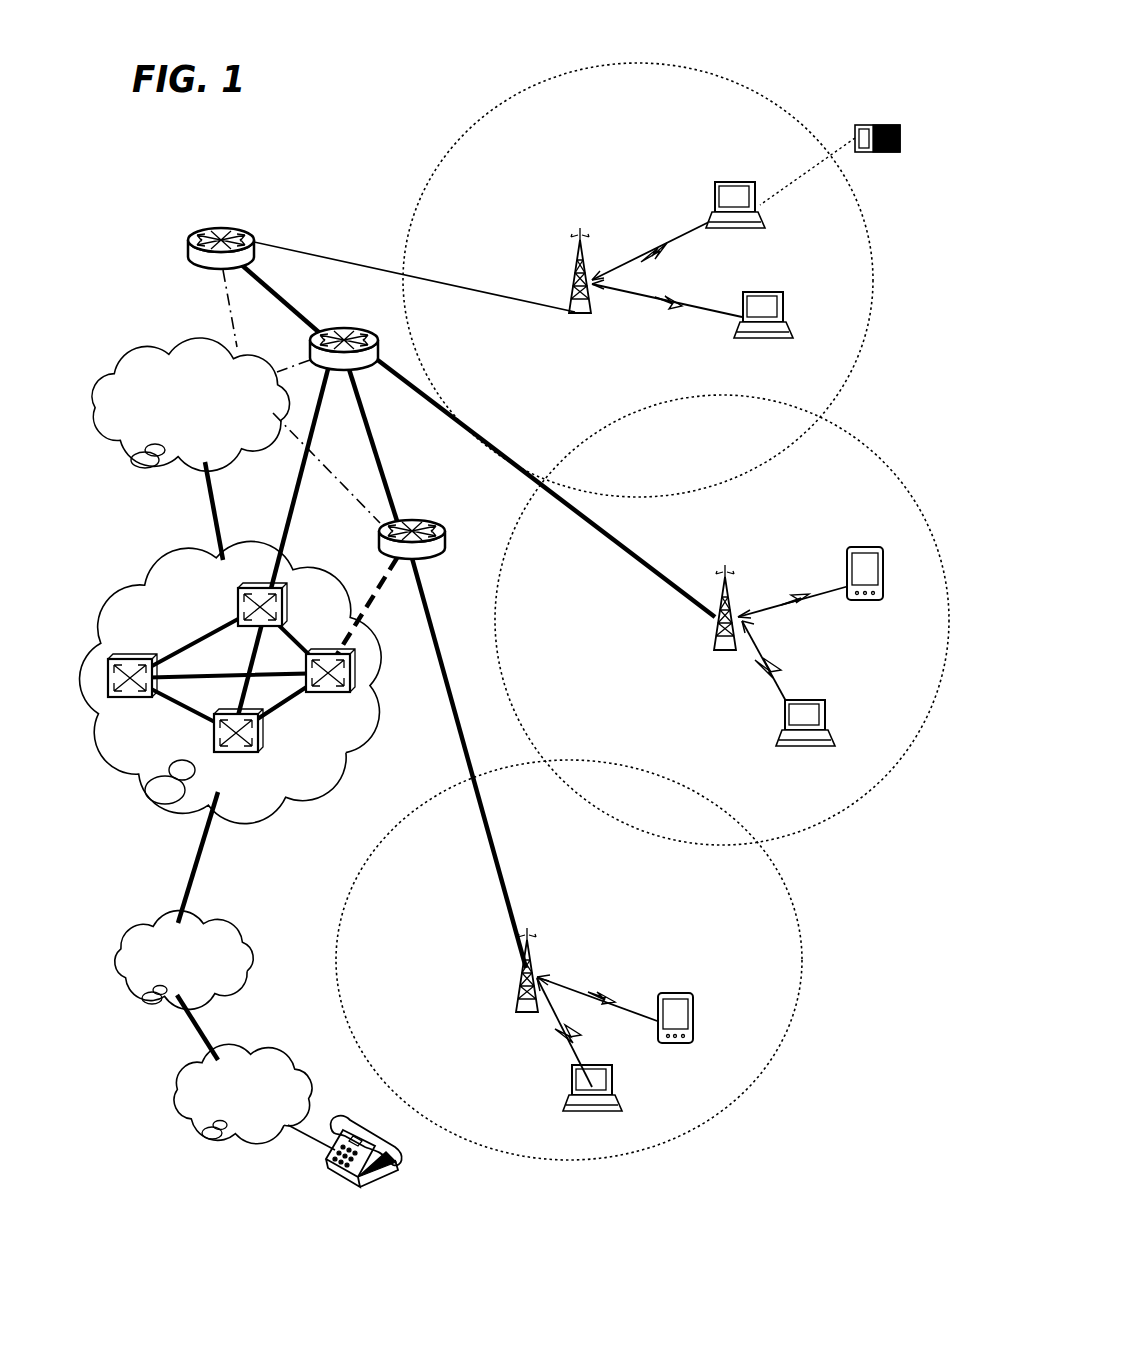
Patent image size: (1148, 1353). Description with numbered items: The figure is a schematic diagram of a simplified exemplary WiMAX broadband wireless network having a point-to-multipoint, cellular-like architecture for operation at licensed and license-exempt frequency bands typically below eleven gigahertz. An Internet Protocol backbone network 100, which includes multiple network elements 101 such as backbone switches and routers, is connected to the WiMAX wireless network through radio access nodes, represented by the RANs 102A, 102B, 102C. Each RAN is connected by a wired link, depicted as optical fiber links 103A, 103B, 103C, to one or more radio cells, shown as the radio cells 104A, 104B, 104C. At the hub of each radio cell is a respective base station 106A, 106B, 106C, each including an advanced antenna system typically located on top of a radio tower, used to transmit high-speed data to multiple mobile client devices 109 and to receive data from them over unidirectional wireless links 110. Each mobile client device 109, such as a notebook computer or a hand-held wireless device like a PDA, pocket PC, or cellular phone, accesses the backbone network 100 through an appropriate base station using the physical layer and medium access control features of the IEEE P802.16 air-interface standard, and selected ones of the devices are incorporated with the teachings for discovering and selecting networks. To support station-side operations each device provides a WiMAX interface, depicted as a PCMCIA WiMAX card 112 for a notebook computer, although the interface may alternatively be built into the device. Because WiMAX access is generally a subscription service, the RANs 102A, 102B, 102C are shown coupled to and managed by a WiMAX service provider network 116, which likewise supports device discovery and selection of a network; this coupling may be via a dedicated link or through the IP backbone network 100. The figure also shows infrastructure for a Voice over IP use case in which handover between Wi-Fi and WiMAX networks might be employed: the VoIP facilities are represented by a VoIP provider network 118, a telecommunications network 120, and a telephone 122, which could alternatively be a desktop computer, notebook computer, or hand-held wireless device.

The Internet Protocol (IP) backbone network 100 is at (203, 553).
The network elements 101 is at (270, 793).
The radio access node (RAN) 102A is at (196, 230).
The radio access node (RAN) 102B is at (382, 333).
The radio access node (RAN) 102C is at (412, 520).
The optical fiber link 103A is at (337, 257).
The optical fiber link 103B is at (647, 562).
The optical fiber link 103C is at (447, 690).
The radio cell 104A is at (775, 112).
The radio cell 104B is at (873, 452).
The radio cell 104C is at (798, 950).
The base station (BS) 106A is at (568, 273).
The base station (BS) 106B is at (714, 617).
The base station (BS) 106C is at (522, 995).
The mobile client device (MCD) 109 is at (735, 188).
The unidirectional wireless link 110 is at (685, 307).
The PCMCIA WiMAX card 112 is at (898, 125).
The WiMAX service provider network 116 is at (203, 347).
The VoIP provider network 118 is at (238, 918).
The telecommunications (telco) network 120 is at (180, 1120).
The telephone 122 is at (385, 1170).